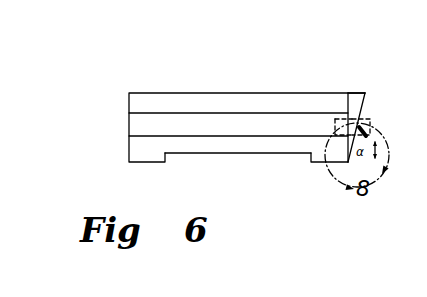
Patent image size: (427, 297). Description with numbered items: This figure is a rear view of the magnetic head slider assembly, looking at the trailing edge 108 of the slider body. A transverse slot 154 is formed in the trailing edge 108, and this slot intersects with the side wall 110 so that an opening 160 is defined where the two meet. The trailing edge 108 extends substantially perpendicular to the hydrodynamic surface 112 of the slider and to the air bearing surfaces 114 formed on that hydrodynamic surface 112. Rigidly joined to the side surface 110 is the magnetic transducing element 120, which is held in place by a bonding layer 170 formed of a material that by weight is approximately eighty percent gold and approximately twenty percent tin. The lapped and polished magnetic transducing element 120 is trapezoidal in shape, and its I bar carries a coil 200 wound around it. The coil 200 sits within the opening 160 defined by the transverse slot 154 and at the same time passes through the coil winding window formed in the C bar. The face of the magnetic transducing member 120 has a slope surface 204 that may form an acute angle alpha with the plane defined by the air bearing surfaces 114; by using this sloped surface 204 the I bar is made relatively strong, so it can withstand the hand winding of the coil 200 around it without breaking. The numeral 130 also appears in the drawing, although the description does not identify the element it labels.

The trailing edge 108 is at (154, 105).
The transverse slot 154 is at (143, 125).
The side surface 110 is at (346, 96).
The air bearing surfaces 114 is at (130, 162).
The hydrodynamic surface 112 is at (263, 153).
The magnetic transducing element 120 is at (362, 97).
The bonding layer 170 is at (351, 93).
The slope surface 204 is at (366, 98).
The coil 200 is at (360, 121).
The opening 160 is at (342, 124).
The pivot region 130 is at (343, 122).